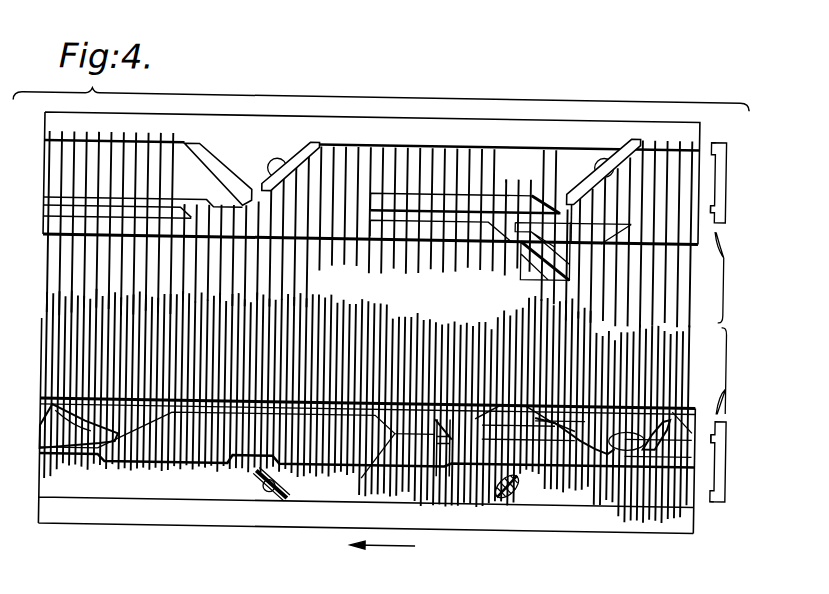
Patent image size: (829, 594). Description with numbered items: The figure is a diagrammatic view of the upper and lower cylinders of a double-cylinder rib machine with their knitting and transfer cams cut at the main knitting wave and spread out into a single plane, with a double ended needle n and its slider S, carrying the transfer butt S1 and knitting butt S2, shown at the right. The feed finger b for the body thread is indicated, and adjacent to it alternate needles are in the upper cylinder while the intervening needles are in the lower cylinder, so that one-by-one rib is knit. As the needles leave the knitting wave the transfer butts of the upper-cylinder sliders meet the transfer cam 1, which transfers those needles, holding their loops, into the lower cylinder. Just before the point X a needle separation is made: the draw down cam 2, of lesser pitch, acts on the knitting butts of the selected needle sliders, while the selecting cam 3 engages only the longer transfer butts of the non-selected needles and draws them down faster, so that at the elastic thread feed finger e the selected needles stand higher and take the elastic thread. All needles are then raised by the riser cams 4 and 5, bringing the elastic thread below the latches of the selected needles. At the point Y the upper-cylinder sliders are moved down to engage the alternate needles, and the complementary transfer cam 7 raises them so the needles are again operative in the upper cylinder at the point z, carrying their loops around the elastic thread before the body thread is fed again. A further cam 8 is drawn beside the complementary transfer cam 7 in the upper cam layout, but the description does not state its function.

The transfer cam 1 is at (622, 136).
The draw down cam 2 is at (481, 443).
The selecting cam 3 is at (503, 492).
The riser cam 4 is at (443, 440).
The riser cam 5 is at (388, 441).
The complementary transfer cam 7 is at (213, 172).
The cam 8 is at (303, 142).
The double ended needle n is at (732, 355).
The slider S is at (733, 464).
The transfer butt S1 is at (710, 506).
The knitting butt S2 is at (733, 429).
The point X is at (571, 264).
The point Y is at (434, 243).
The feed finger b is at (98, 211).
The point Z z is at (184, 247).
The elastic thread feed finger e is at (496, 247).